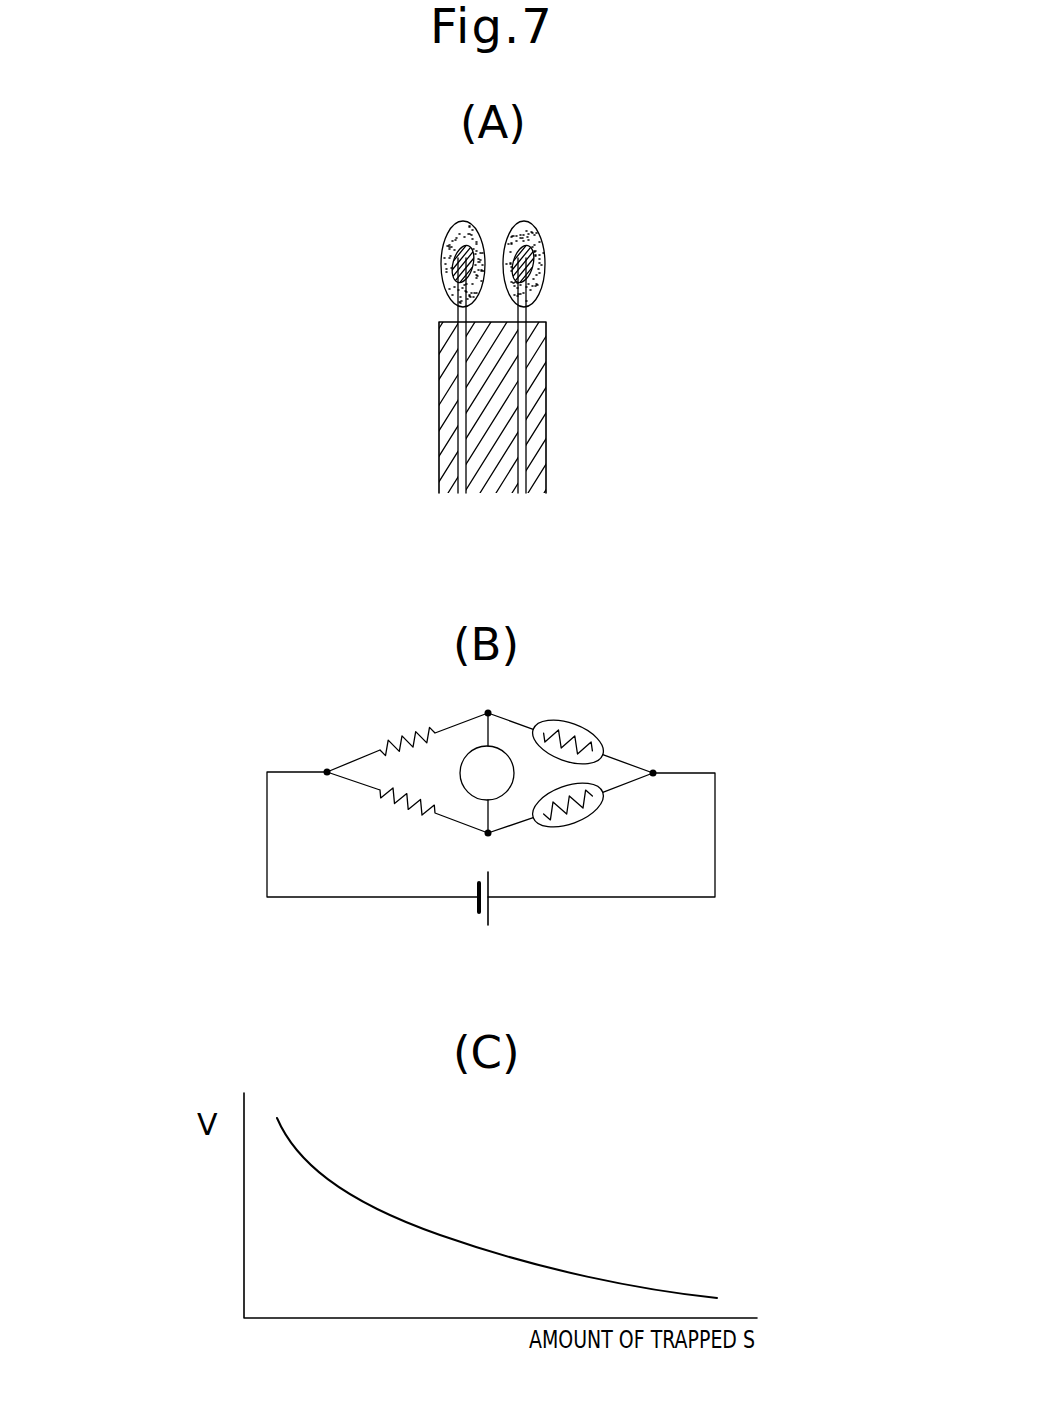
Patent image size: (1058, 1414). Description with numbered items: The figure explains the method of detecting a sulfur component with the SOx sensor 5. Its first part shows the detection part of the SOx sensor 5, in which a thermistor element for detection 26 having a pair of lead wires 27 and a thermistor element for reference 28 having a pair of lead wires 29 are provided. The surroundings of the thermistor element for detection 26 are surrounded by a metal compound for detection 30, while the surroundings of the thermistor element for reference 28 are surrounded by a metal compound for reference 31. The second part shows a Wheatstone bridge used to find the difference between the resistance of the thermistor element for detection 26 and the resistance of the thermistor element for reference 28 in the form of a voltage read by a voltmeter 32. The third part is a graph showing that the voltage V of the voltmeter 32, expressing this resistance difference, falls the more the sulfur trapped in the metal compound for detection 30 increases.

The SOx sensor 5 is at (437, 427).
The thermistor element for detection 26 is at (455, 260).
The lead wires 27 is at (466, 373).
The thermistor element for reference 28 is at (532, 260).
The lead wires 29 is at (527, 366).
The metal compound for detection 30 is at (453, 230).
The metal compound for reference 31 is at (528, 225).
The voltmeter 32 is at (470, 750).